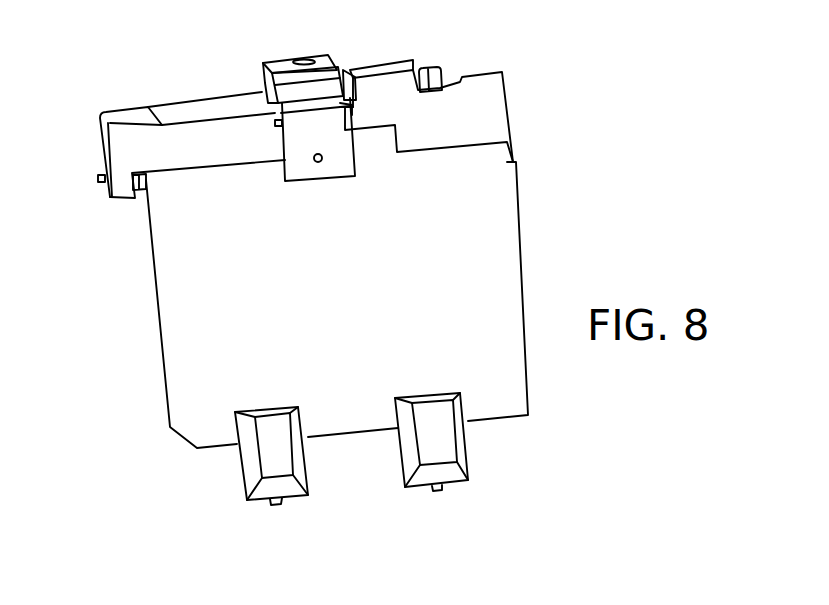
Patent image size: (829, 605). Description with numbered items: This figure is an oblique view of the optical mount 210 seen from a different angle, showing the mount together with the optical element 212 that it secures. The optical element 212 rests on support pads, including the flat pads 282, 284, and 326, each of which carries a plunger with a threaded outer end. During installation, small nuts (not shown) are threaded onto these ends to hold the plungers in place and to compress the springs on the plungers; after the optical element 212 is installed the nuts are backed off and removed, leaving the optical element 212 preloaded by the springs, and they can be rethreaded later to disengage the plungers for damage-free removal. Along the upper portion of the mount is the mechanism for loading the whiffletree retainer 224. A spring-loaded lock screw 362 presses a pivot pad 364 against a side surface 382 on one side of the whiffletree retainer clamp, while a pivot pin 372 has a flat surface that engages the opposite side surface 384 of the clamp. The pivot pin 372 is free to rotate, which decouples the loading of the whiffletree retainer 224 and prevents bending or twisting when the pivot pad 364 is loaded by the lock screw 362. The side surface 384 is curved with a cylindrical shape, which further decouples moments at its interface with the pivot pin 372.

The optical mount 210 is at (80, 111).
The optical element 212 is at (497, 288).
The whiffletree retainer 224 is at (497, 110).
The flat pad 282 is at (266, 513).
The flat pad 284 is at (453, 499).
The flat pad 326 is at (99, 201).
The spring-loaded lock screw 362 is at (443, 62).
The pivot pad 364 is at (360, 67).
The pivot pin 372 is at (262, 93).
The side surface 382 is at (342, 67).
The side surface 384 is at (264, 73).